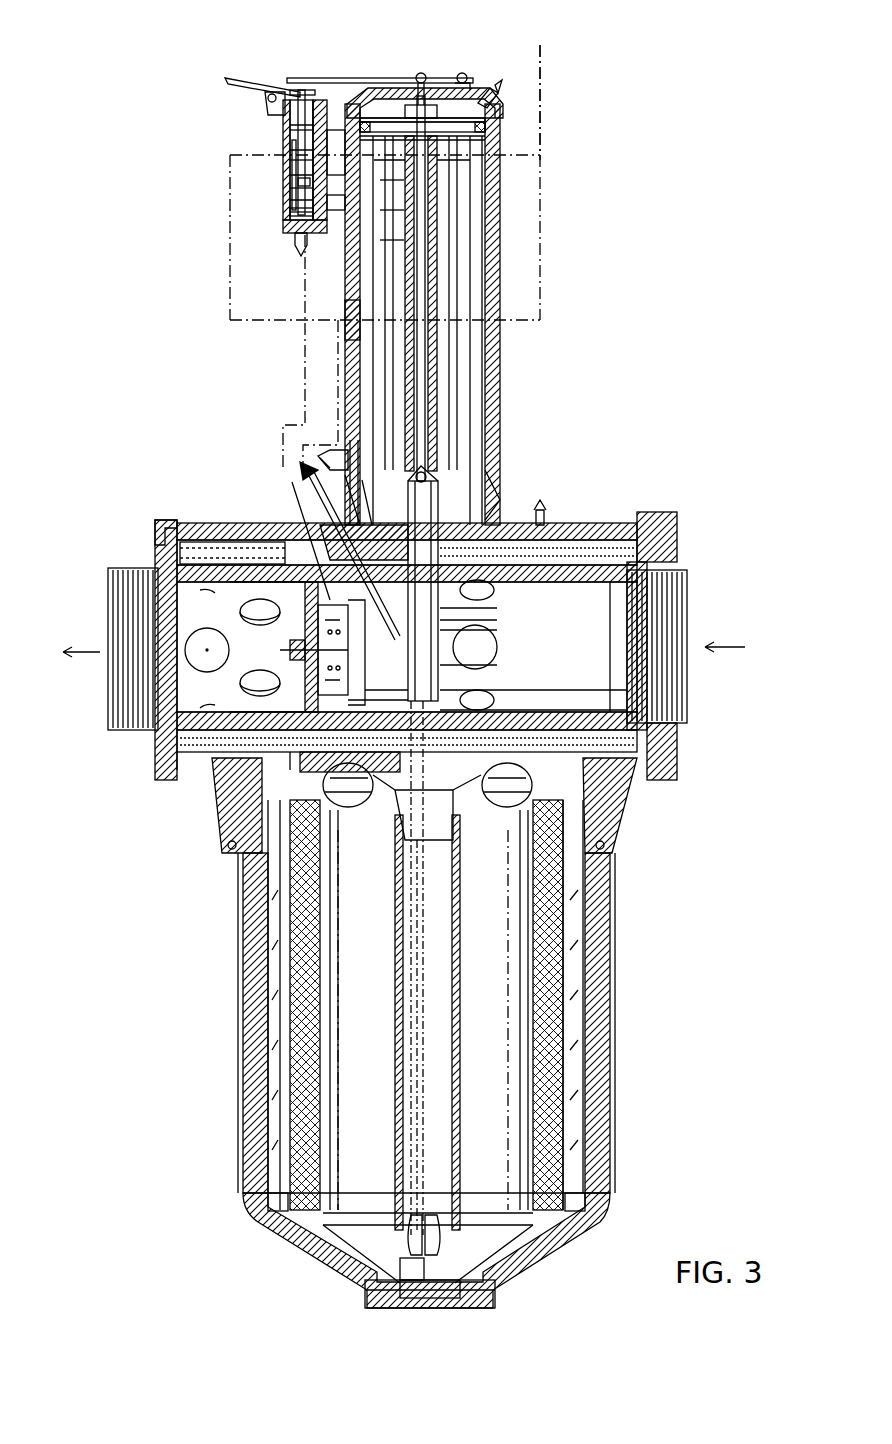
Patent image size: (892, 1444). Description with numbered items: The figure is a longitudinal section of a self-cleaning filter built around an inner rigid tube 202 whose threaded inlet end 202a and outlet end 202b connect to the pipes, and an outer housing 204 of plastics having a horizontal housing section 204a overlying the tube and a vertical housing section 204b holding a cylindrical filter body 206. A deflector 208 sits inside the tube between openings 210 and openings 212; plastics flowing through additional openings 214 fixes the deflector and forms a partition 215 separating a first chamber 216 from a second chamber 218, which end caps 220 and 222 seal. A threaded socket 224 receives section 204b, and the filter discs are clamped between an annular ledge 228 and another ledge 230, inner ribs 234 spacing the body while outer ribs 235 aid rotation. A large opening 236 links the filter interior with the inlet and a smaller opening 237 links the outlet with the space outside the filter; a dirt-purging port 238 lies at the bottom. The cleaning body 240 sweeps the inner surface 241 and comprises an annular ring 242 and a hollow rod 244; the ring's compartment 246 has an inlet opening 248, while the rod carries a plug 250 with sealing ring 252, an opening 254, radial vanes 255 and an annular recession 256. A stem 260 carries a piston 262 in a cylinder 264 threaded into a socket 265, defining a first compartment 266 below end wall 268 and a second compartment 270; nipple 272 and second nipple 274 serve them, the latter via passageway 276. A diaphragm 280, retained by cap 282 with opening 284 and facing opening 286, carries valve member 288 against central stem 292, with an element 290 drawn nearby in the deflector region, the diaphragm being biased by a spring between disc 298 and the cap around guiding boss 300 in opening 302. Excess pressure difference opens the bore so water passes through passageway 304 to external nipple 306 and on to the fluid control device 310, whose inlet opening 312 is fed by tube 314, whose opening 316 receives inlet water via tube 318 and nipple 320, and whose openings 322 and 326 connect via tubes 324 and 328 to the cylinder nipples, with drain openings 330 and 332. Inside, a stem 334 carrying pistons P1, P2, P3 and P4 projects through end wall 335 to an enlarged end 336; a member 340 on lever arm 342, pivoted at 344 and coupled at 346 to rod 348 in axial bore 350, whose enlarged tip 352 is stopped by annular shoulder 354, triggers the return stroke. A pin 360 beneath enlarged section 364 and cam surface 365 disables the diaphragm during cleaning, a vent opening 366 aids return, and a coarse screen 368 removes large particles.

The inner rigid tube 202 is at (110, 576).
The inlet end 202a is at (686, 692).
The outlet end 202b is at (110, 688).
The outer housing 204 is at (210, 525).
The horizontal housing section 204a is at (225, 523).
The vertical housing section 204b is at (600, 1020).
The cylindrical filter body 206 is at (564, 990).
The deflector 208 is at (366, 606).
The openings 210 is at (500, 710).
The openings 212 is at (236, 684).
The additional openings 214 is at (320, 735).
The partition 215 is at (290, 484).
The first chamber 216 is at (572, 556).
The second chamber 218 is at (232, 555).
The end cap 220 is at (676, 530).
The end cap 222 is at (158, 530).
The internally threaded socket 224 is at (613, 805).
The annular flange or ledge 228 is at (530, 840).
The annular ledge 230 is at (540, 1210).
The ribs 234 is at (590, 1057).
The ribs 235 is at (612, 1100).
The large opening 236 is at (610, 737).
The smaller opening 237 is at (270, 735).
The dirt-purging port 238 is at (400, 1308).
The cleaning body 240 is at (386, 943).
The inner surface 241 is at (320, 1088).
The annular ring 242 is at (385, 832).
The hollow rod 244 is at (460, 1016).
The inner annular compartment 246 is at (505, 806).
The circular inlet opening 248 is at (350, 806).
The plug 250 is at (455, 1300).
The sealing ring 252 is at (400, 1280).
The opening 254 is at (520, 1222).
The radial vanes 255 is at (490, 1268).
The annular recession 256 is at (460, 1228).
The stem 260 is at (447, 455).
The piston 262 is at (470, 136).
The cylinder 264 is at (498, 256).
The socket 265 is at (505, 482).
The first compartment 266 is at (497, 100).
The end wall 268 is at (447, 96).
The second compartment 270 is at (435, 303).
The nipple 272 is at (500, 90).
The second nipple 274 is at (330, 452).
The passageway 276 is at (358, 492).
The diaphragm 280 is at (440, 608).
The cap 282 is at (215, 790).
The opening 284 is at (267, 613).
The opening 286 is at (386, 692).
The central valve member 288 is at (335, 560).
The pilot passage 290 is at (358, 520).
The central stem 292 is at (440, 690).
The disc 298 is at (200, 728).
The guiding boss 300 is at (264, 684).
The opening 302 is at (292, 652).
The passageway 304 is at (285, 556).
The external nipple 306 is at (343, 551).
The fluid control device 310 is at (205, 101).
The inlet opening 312 is at (300, 257).
The tube 314 is at (306, 392).
The opening 316 is at (293, 155).
The tube 318 is at (540, 322).
The nipple 320 is at (546, 507).
The opening 322 is at (385, 207).
The tube 324 is at (540, 130).
The opening 326 is at (385, 180).
The tube 328 is at (346, 330).
The drain opening 330 is at (297, 185).
The drain opening 332 is at (285, 132).
The stem 334 is at (385, 237).
The end wall 335 is at (322, 100).
The enlarged end 336 is at (285, 92).
The member 340 is at (295, 90).
The lever arm 342 is at (380, 78).
The pivot 344 is at (466, 84).
The coupling 346 is at (425, 74).
The rod 348 is at (434, 196).
The axial bore 350 is at (428, 352).
The enlarged tip 352 is at (430, 478).
The annular shoulder 354 is at (408, 140).
The pin 360 is at (470, 647).
The enlarged diameter section 364 is at (490, 594).
The inclined cam surface 365 is at (494, 636).
The vent opening 366 is at (293, 230).
The coarse filter screen or sleeve 368 is at (682, 565).
The piston P1 is at (290, 215).
The piston P2 is at (290, 188).
The piston P3 is at (290, 163).
The piston P4 is at (290, 138).